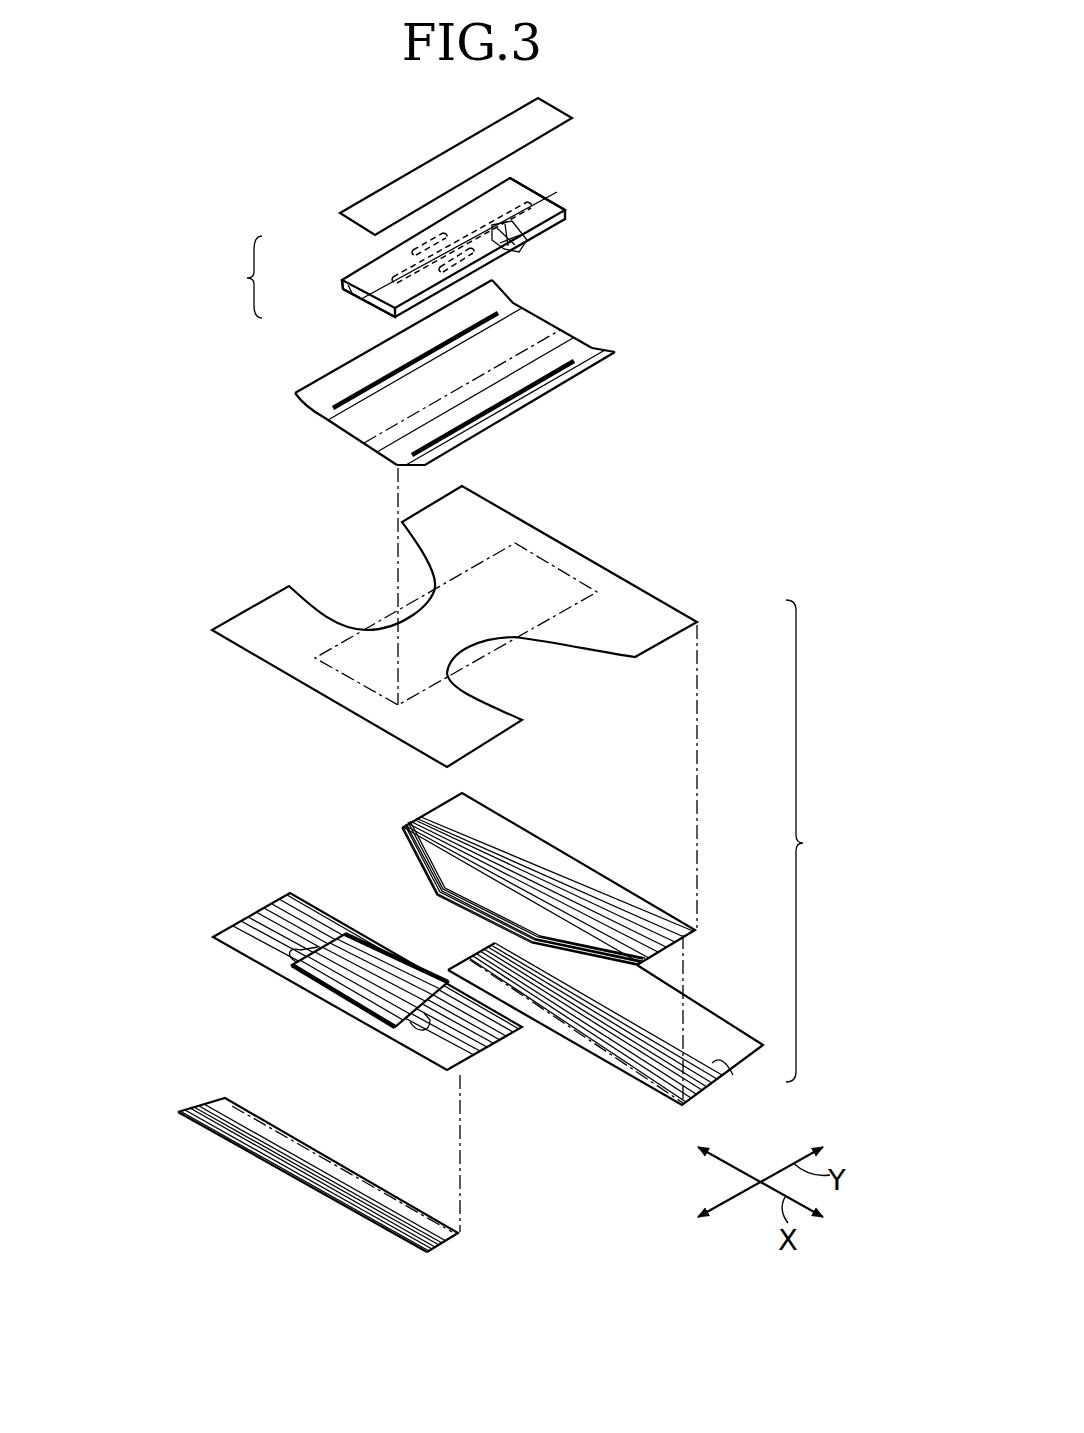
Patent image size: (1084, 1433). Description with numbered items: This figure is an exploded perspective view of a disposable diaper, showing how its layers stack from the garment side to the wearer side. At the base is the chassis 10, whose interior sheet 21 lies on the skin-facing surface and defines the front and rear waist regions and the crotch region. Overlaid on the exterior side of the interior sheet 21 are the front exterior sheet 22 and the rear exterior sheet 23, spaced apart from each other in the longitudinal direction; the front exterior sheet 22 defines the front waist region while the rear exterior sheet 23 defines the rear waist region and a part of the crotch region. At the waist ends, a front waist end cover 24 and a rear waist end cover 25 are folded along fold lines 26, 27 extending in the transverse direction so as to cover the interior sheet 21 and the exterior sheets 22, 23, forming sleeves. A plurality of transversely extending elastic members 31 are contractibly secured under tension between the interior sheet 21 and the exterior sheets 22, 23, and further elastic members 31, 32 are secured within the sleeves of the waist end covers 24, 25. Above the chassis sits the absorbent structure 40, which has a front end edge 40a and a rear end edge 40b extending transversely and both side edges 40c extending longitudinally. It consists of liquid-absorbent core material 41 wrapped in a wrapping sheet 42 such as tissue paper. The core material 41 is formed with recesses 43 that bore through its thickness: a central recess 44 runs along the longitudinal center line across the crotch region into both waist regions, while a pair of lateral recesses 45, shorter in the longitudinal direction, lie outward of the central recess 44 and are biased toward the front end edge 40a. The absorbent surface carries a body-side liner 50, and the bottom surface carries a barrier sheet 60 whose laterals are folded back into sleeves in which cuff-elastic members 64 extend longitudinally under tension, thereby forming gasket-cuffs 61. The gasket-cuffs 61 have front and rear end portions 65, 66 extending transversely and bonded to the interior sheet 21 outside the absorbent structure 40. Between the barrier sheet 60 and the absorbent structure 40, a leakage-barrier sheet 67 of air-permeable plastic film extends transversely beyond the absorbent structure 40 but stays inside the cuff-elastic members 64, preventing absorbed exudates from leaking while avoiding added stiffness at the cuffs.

The chassis 10 is at (814, 841).
The interior sheet 21 is at (567, 560).
The front exterior sheet 22 is at (368, 1032).
The rear exterior sheet 23 is at (587, 857).
The front waist end cover 24 is at (292, 1180).
The rear waist end cover 25 is at (712, 1010).
The fold line 26 is at (343, 1195).
The fold line 27 is at (730, 1072).
The elastic members 31 is at (443, 822).
The elastic members 32 is at (595, 1037).
The absorbent structure 40 is at (566, 198).
The front end edge 40a is at (367, 310).
The rear end edge 40b is at (560, 197).
The side edges 40c is at (487, 190).
The core material 41 is at (518, 247).
The wrapping sheet 42 is at (548, 210).
The recesses 43 is at (237, 277).
The central recess 44 is at (397, 265).
The lateral recesses 45 is at (413, 243).
The body-side liner 50 is at (493, 140).
The barrier sheet 60 is at (593, 345).
The gasket-cuffs 61 is at (347, 375).
The cuff-elastic members 64 is at (350, 395).
The front end portion 65 is at (357, 447).
The rear end portion 66 is at (543, 317).
The leakage-barrier sheet 67 is at (552, 332).